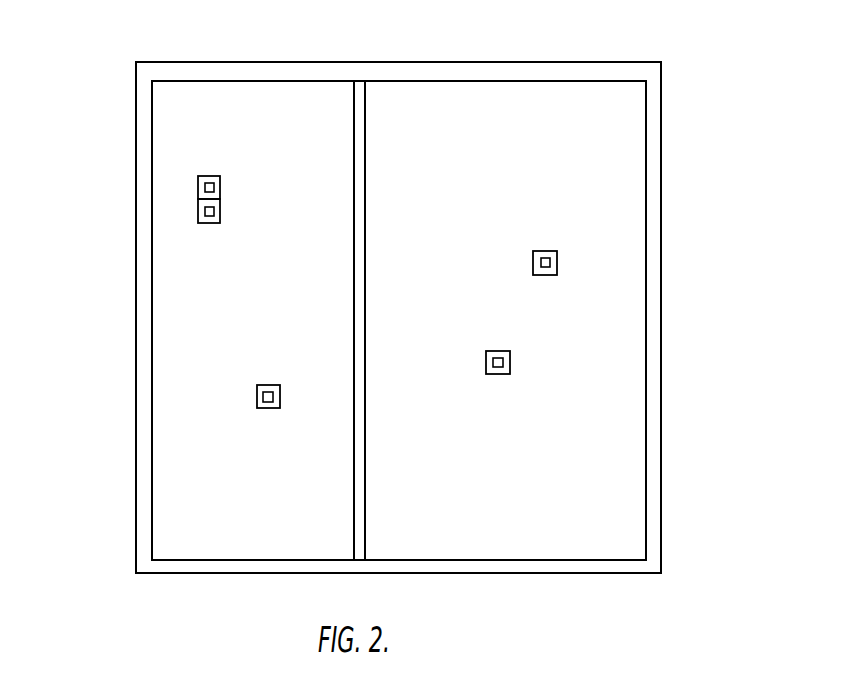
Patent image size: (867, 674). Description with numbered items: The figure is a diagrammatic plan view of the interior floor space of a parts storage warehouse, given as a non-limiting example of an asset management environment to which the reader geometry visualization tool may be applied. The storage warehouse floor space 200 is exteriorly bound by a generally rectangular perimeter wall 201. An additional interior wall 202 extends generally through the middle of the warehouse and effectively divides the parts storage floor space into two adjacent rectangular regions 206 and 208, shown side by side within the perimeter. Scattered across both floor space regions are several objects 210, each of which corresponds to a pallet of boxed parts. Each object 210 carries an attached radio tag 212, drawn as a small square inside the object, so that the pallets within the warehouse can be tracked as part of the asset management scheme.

The storage warehouse floor space 200 is at (502, 102).
The perimeter wall 201 is at (662, 109).
The interior wall 202 is at (365, 310).
The rectangular region 206 is at (628, 388).
The rectangular region 208 is at (159, 390).
The object 210 is at (221, 183).
The radio tag 212 is at (208, 182).